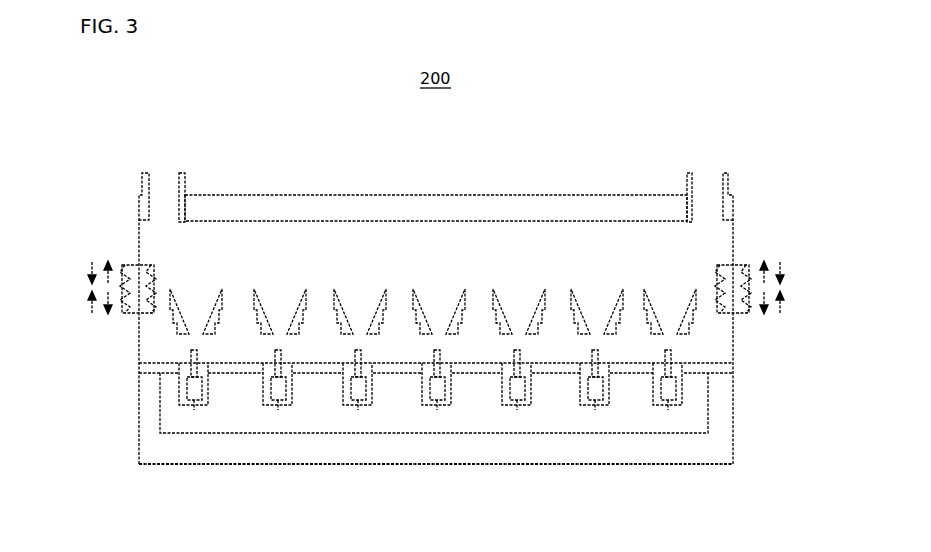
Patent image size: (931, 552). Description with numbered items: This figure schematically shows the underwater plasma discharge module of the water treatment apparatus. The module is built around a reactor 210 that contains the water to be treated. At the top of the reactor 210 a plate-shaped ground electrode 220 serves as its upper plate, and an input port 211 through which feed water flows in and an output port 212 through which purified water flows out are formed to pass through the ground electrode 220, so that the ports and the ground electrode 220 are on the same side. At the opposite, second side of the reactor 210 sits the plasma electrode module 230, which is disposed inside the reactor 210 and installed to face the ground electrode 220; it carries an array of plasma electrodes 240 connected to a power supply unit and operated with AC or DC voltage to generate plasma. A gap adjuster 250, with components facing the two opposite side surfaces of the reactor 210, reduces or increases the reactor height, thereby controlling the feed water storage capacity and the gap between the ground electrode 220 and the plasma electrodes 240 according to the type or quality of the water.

The reactor 210 is at (735, 238).
The input port 211 is at (184, 173).
The output port 212 is at (728, 173).
The ground electrode 220 is at (464, 210).
The plasma electrode module 230 is at (640, 433).
The plasma electrode 240 is at (683, 389).
The gap adjuster 250 is at (130, 263).